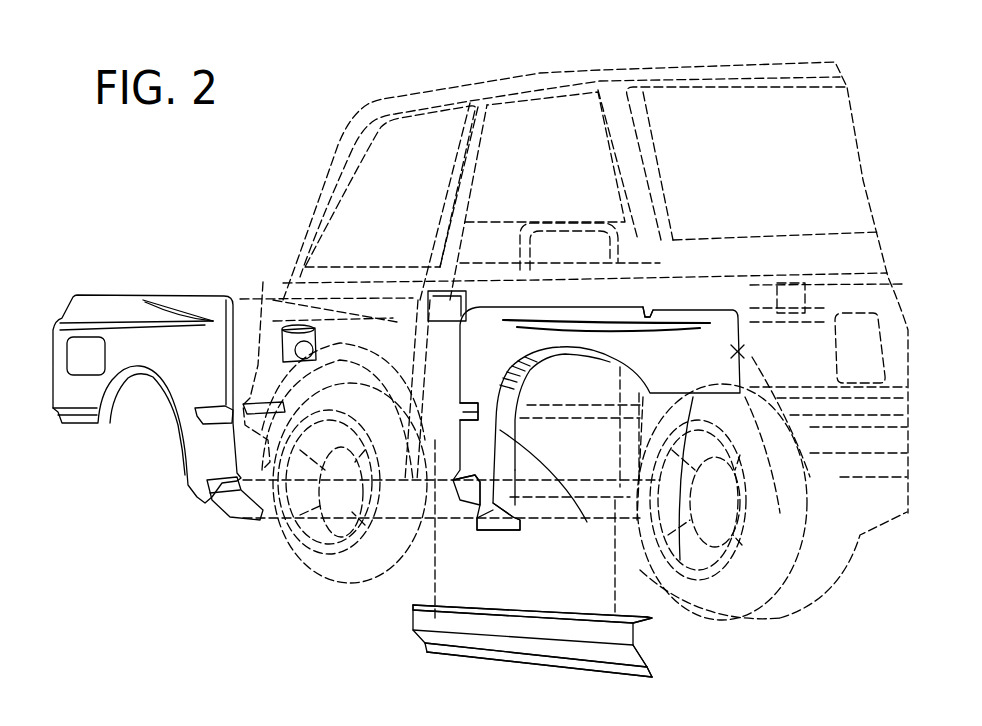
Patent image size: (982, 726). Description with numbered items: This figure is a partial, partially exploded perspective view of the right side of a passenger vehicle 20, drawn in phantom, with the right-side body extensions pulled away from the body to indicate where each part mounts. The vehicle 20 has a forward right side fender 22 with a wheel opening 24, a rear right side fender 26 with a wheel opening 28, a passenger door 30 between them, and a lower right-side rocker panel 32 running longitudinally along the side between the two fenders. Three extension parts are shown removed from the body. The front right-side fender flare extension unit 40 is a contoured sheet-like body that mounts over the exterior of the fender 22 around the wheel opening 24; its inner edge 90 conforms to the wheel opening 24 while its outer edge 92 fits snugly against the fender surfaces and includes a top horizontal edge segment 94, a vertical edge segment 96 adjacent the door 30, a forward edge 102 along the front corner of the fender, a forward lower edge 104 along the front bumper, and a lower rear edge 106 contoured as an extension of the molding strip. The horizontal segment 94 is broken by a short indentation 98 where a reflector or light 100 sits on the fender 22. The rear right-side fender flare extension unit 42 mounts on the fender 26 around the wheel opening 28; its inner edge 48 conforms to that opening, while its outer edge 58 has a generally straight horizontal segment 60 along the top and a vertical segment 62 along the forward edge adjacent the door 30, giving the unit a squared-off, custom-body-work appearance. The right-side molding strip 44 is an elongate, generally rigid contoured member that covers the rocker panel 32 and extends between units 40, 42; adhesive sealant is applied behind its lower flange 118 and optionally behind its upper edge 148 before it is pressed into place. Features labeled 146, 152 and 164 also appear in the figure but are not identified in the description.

The passenger vehicle 20 is at (319, 119).
The forward right side fender 22 is at (784, 367).
The wheel opening 24 is at (764, 388).
The rear right side fender 26 is at (387, 355).
The wheel opening 28 is at (344, 392).
The passenger door 30 is at (530, 297).
The lower right-side rocker panel 32 is at (535, 490).
The front right-side fender flare extension unit 40 is at (680, 347).
The rear right-side fender flare extension unit 42 is at (171, 360).
The right-side molding strip 44 is at (493, 630).
The inner edge 48 is at (120, 397).
The outer edge 58 is at (238, 318).
The horizontal segment 60 is at (170, 297).
The vertical segment 62 is at (237, 367).
The inner edge 90 is at (552, 489).
The outer edge 92 is at (500, 307).
The top horizontal edge segment 94 is at (568, 305).
The vertical edge segment 96 is at (455, 447).
The short indentation 98 is at (657, 313).
The reflector or light 100 is at (790, 290).
The forward edge 102 is at (741, 355).
The forward lower edge 104 is at (680, 560).
The lower rear edge 106 is at (500, 530).
The lower flange 118 is at (547, 670).
The end of sill 146 is at (674, 673).
The upper edge 148 is at (567, 608).
The lower bracket of front fender 152 is at (217, 490).
The lamp opening 164 is at (87, 347).